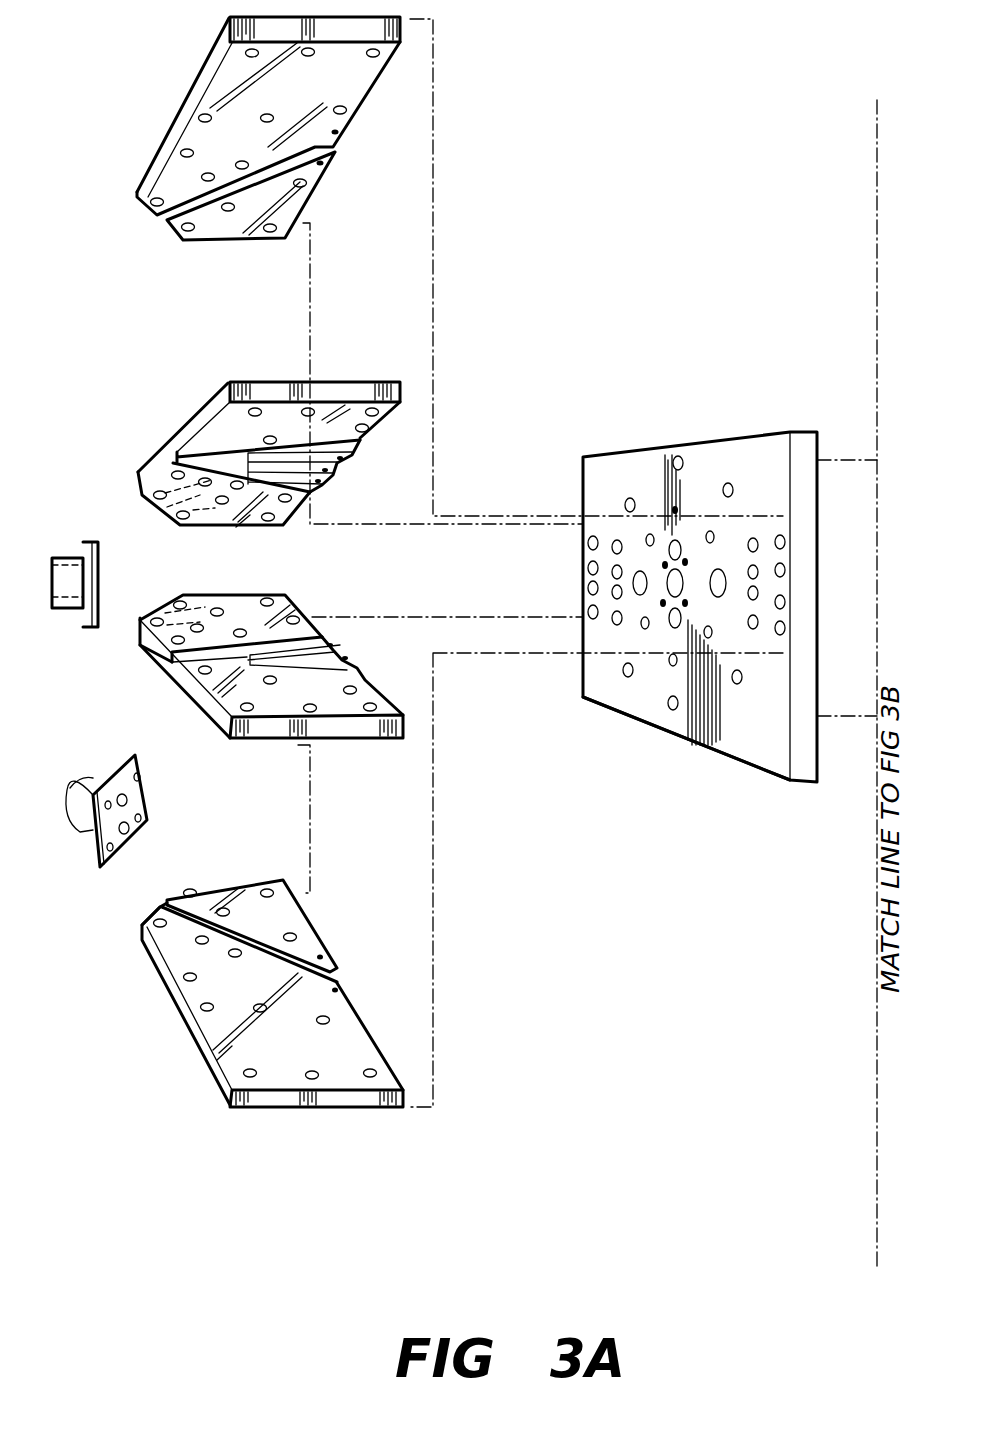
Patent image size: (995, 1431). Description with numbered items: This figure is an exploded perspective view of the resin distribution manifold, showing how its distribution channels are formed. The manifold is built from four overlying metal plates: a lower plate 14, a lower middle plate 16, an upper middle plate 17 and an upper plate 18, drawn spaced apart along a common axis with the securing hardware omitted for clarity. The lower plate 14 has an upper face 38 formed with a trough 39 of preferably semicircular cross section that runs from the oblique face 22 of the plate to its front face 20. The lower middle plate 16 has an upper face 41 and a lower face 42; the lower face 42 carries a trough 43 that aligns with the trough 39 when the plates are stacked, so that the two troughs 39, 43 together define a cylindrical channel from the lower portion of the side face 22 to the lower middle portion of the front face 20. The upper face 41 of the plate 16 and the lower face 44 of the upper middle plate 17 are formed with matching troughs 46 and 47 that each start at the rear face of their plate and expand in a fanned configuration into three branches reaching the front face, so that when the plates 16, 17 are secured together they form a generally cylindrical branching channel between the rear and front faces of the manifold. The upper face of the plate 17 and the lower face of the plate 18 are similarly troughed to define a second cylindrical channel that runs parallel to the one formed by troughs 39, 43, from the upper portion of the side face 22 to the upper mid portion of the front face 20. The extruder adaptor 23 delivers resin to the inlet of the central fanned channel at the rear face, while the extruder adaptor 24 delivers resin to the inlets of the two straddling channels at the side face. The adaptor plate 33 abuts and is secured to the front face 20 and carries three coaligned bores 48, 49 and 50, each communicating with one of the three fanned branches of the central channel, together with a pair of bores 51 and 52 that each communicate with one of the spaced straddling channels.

The lower plate 14 is at (251, 1021).
The lower middle plate 16 is at (266, 672).
The upper middle plate 17 is at (277, 433).
The upper plate 18 is at (230, 32).
The front face 20 is at (378, 1042).
The oblique face 22 is at (143, 917).
The extruder adaptor 23 is at (68, 617).
The extruder adaptor 24 is at (75, 843).
The adaptor plate 33 is at (683, 632).
The upper face 38 is at (357, 1037).
The trough 39 is at (257, 940).
The upper face 41 is at (373, 695).
The lower face 42 is at (155, 648).
The trough 43 is at (168, 577).
The lower face 44 is at (360, 412).
The trough 46 is at (227, 650).
The trough 47 is at (230, 462).
The bore 48 is at (743, 552).
The bore 49 is at (670, 580).
The bore 50 is at (637, 583).
The bore 51 is at (670, 620).
The bore 52 is at (677, 547).